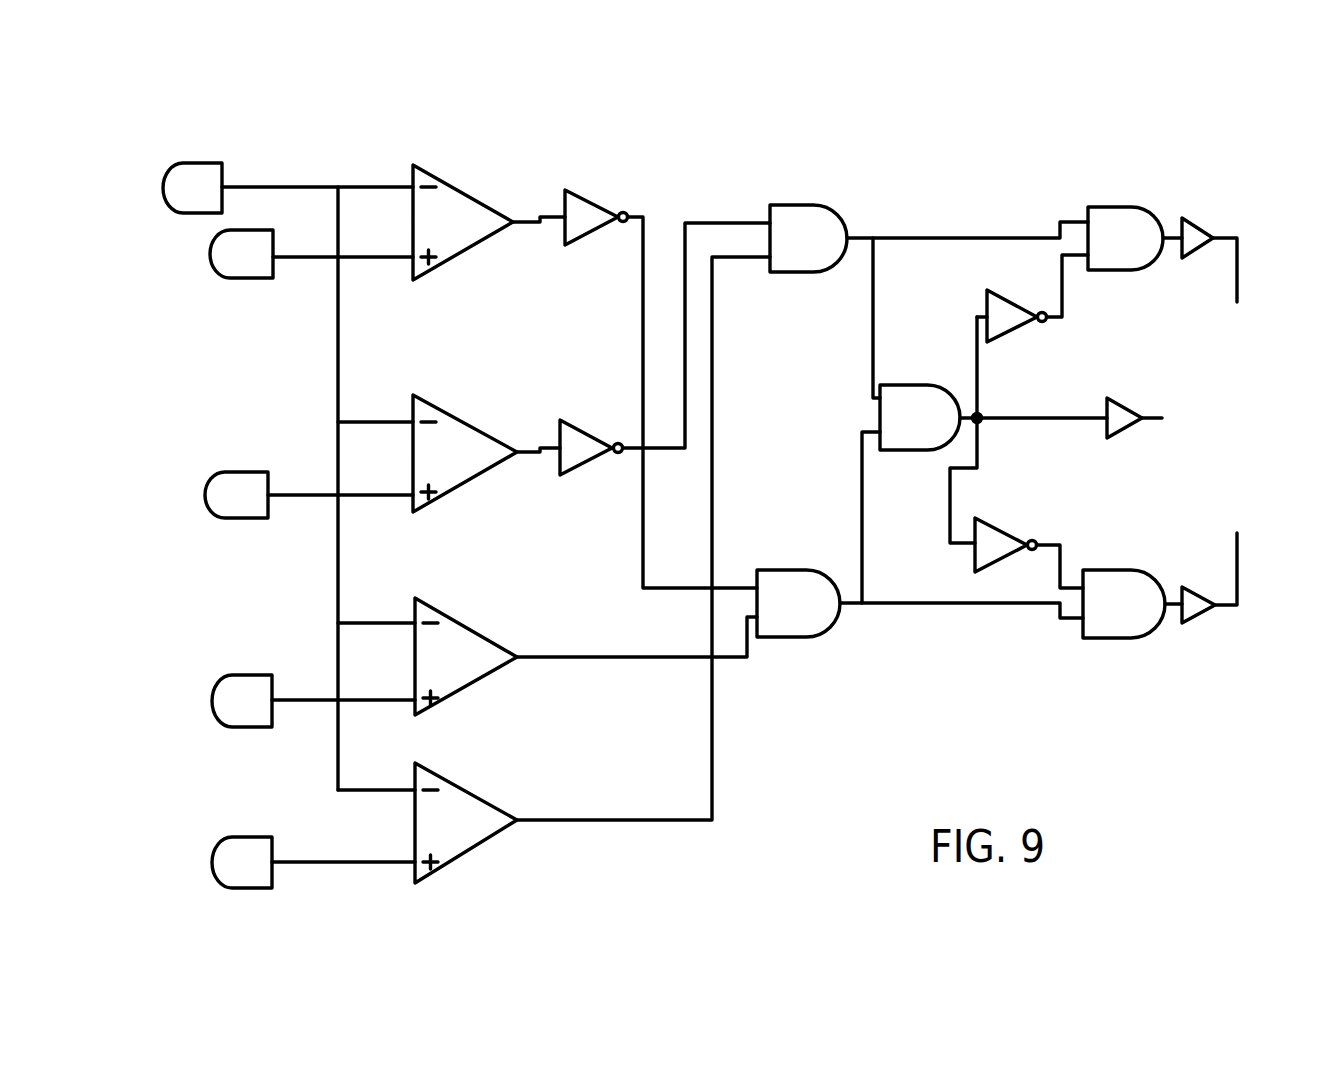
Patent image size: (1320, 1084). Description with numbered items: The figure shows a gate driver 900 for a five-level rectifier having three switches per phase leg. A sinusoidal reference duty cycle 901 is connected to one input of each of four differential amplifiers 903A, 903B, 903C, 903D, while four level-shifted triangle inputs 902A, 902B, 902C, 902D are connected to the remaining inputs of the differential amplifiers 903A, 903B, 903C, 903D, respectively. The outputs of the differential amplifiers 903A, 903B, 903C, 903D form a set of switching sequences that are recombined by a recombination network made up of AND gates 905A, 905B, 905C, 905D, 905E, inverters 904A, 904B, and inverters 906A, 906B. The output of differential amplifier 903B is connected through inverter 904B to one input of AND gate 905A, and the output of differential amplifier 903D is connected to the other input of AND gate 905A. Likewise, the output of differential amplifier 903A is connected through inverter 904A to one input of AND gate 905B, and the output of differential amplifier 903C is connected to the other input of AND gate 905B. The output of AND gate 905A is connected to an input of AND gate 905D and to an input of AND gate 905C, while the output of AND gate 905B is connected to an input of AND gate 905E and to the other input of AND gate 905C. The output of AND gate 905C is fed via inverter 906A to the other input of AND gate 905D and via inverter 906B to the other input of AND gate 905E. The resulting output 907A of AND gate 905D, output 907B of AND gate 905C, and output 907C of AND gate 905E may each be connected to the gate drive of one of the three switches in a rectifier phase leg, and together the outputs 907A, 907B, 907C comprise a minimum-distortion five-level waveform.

The gate driver 900 is at (263, 110).
The sinusoidal reference duty cycle 901 is at (208, 196).
The level-shifted triangle input 902A is at (260, 262).
The level-shifted triangle input 902B is at (254, 504).
The level-shifted triangle input 902C is at (260, 710).
The level-shifted triangle input 902D is at (260, 871).
The differential amplifier 903A is at (462, 236).
The differential amplifier 903B is at (470, 466).
The differential amplifier 903C is at (468, 671).
The differential amplifier 903D is at (470, 833).
The inverter 904A is at (600, 224).
The inverter 904B is at (596, 455).
The AND gate 905A is at (829, 248).
The AND gate 905B is at (819, 613).
The AND gate 905C is at (940, 428).
The AND gate 905D is at (1145, 248).
The AND gate 905E is at (1143, 615).
The inverter 906A is at (1020, 324).
The inverter 906B is at (1010, 551).
The output 907A is at (1251, 320).
The output 907B is at (1195, 426).
The output 907C is at (1251, 532).